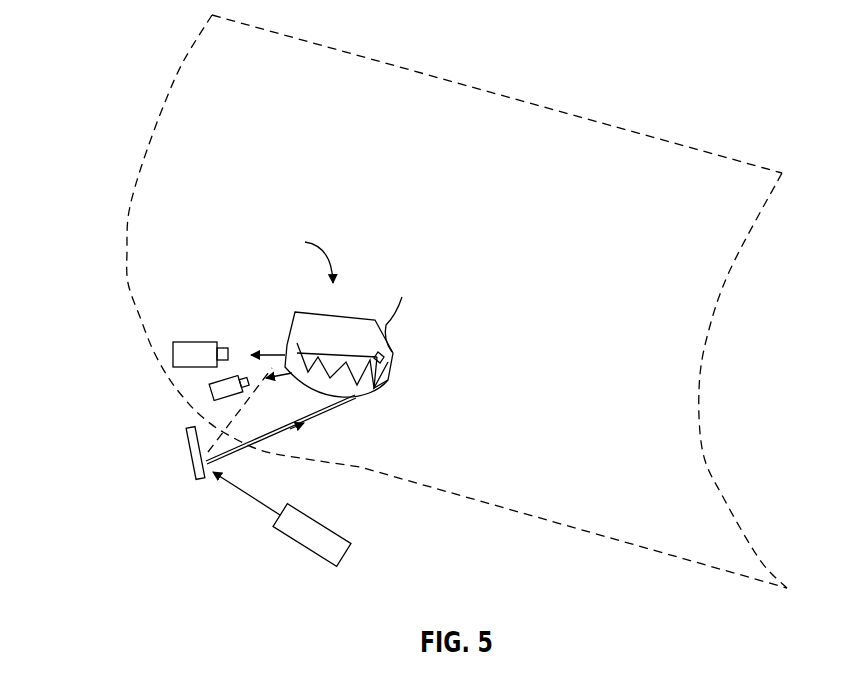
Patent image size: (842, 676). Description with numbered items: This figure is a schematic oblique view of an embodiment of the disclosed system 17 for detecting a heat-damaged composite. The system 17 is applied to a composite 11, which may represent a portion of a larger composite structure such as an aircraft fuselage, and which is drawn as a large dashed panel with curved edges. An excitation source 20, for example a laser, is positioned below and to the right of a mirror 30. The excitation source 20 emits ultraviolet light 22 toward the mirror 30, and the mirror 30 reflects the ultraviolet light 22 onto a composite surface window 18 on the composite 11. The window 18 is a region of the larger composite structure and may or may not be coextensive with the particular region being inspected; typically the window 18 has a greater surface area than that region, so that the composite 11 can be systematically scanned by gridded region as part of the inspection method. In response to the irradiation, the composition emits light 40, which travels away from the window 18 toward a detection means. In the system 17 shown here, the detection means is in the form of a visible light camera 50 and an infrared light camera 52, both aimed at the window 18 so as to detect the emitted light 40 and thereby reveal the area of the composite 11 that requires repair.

The composite 11 is at (543, 108).
The system 17 is at (87, 451).
The composite surface window 18 is at (374, 342).
The excitation source 20 is at (308, 550).
The ultraviolet light 22 is at (240, 493).
The mirror 30 is at (195, 477).
The light 40 is at (283, 352).
The visible light camera 50 is at (208, 399).
The infrared light camera 52 is at (173, 377).